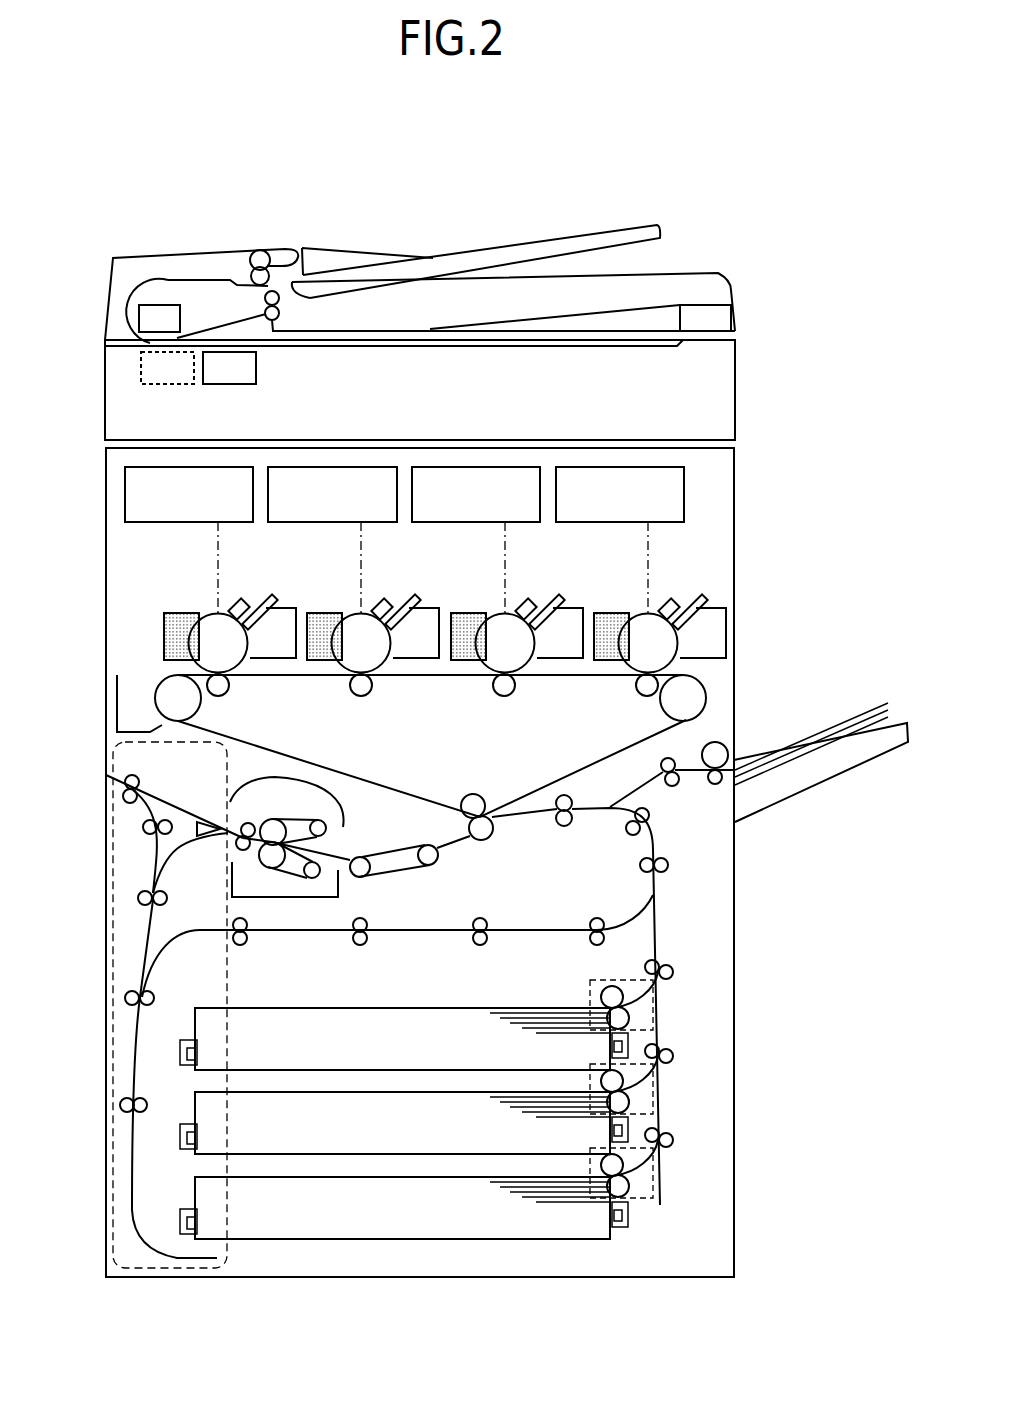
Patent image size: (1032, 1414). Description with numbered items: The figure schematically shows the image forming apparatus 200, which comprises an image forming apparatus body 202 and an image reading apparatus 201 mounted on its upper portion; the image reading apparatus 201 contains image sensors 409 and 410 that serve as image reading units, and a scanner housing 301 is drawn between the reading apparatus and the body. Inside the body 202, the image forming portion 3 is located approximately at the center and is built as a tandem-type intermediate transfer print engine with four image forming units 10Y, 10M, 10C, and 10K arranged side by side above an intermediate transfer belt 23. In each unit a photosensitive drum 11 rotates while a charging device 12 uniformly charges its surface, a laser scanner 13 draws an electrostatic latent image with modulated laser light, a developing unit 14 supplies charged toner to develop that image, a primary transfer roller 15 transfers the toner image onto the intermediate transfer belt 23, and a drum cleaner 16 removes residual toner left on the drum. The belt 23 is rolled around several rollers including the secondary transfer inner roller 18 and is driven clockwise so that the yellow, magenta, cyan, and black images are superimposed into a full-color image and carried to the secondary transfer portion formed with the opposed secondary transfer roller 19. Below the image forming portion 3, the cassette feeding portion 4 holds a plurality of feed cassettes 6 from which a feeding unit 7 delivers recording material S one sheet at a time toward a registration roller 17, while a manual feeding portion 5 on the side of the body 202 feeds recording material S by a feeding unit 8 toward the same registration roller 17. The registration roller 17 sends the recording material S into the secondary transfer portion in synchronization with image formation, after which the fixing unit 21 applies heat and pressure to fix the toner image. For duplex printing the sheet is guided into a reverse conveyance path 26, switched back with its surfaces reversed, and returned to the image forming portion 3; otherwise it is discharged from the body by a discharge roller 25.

The image forming apparatus 200 is at (725, 238).
The image reading apparatus 201 is at (436, 233).
The image forming apparatus body 202 is at (735, 494).
The image reading unit 301 is at (735, 388).
The image sensor 409 is at (185, 384).
The image sensor 410 is at (165, 302).
The laser scanner 13 is at (203, 508).
The image forming unit 10Y is at (185, 583).
The image forming unit 10M is at (406, 587).
The image forming unit 10C is at (548, 587).
The image forming unit 10K is at (681, 582).
The image forming portion 3 is at (745, 589).
The developing unit 14 is at (165, 632).
The charging device 12 is at (250, 598).
The drum cleaner 16 is at (290, 607).
The photosensitive drum 11 is at (230, 661).
The primary transfer roller 15 is at (215, 697).
The intermediate transfer belt 23 is at (343, 775).
The secondary transfer inner roller 18 is at (473, 795).
The secondary transfer roller 19 is at (484, 840).
The registration roller 17 is at (570, 826).
The feeding unit 8 is at (716, 742).
The recording material S is at (828, 725).
The manual feeding portion 5 is at (794, 824).
The fixing unit 21 is at (365, 807).
The discharge roller 25 is at (117, 778).
The reverse conveyance path 26 is at (96, 1188).
The feed cassette 6 is at (217, 1008).
The feeding unit 7 is at (655, 1003).
The cassette feeding portion 4 is at (740, 1024).